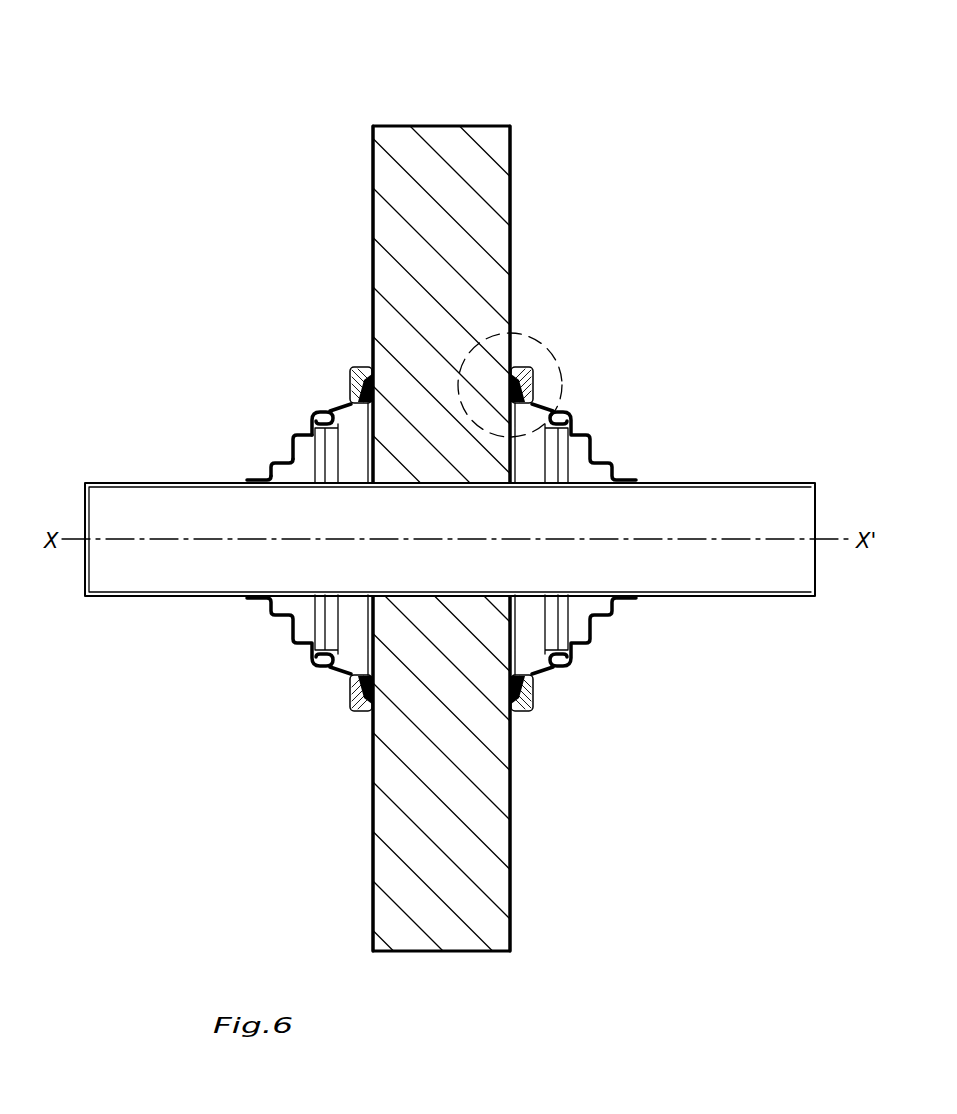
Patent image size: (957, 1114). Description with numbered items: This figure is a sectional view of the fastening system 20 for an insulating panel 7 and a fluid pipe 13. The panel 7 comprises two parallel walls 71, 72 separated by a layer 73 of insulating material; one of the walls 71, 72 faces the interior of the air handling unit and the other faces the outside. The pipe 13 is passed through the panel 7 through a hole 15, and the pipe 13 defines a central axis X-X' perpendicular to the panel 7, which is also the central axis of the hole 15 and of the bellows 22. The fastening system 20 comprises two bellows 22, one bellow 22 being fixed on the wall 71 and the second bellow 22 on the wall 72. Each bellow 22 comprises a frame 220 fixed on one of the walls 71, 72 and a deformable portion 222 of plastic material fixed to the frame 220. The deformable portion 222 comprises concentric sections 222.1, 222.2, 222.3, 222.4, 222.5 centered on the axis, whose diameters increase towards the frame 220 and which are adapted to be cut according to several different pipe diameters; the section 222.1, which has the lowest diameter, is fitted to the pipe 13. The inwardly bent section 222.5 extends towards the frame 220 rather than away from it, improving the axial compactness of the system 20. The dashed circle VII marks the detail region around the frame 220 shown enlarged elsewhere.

The panel 7 is at (598, 12).
The wall 71 is at (373, 150).
The layer of insulating material 73 is at (447, 155).
The wall 72 is at (510, 153).
The pipe 13 is at (772, 483).
The hole 15 is at (452, 488).
The fastening system 20 is at (553, 852).
The bellow 22 is at (292, 675).
The frame 220 is at (533, 368).
The deformable portion 222 is at (580, 432).
The concentric section 222.1 is at (258, 476).
The concentric section 222.2 is at (280, 458).
The concentric section 222.3 is at (302, 430).
The concentric section 222.4 is at (310, 417).
The inwardly bent section 222.5 is at (330, 413).
The detail view circle VII is at (532, 333).